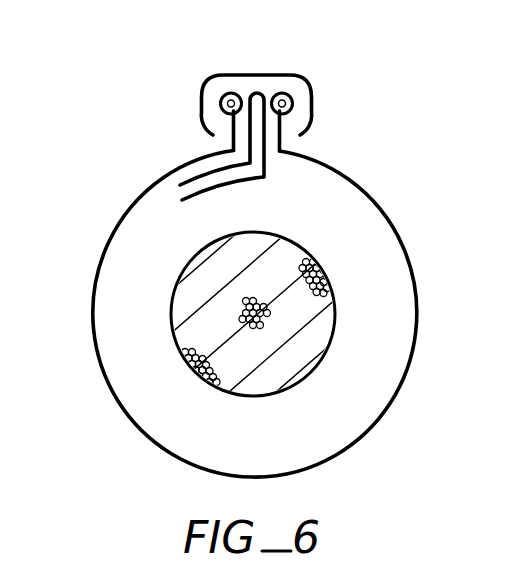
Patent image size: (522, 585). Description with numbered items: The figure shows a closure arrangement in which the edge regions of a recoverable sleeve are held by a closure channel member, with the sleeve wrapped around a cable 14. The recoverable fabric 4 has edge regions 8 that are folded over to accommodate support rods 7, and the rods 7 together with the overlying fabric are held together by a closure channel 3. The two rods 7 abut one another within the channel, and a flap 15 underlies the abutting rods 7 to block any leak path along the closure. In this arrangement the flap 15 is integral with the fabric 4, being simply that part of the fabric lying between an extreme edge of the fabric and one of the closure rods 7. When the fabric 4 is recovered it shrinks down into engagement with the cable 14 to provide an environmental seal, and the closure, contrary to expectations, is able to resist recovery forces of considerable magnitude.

The closure channel 3 is at (258, 73).
The recoverable fabric 4 is at (267, 474).
The support rods 7 is at (223, 96).
The edge regions 8 is at (230, 141).
The cable 14 is at (327, 308).
The flap 15 is at (213, 183).